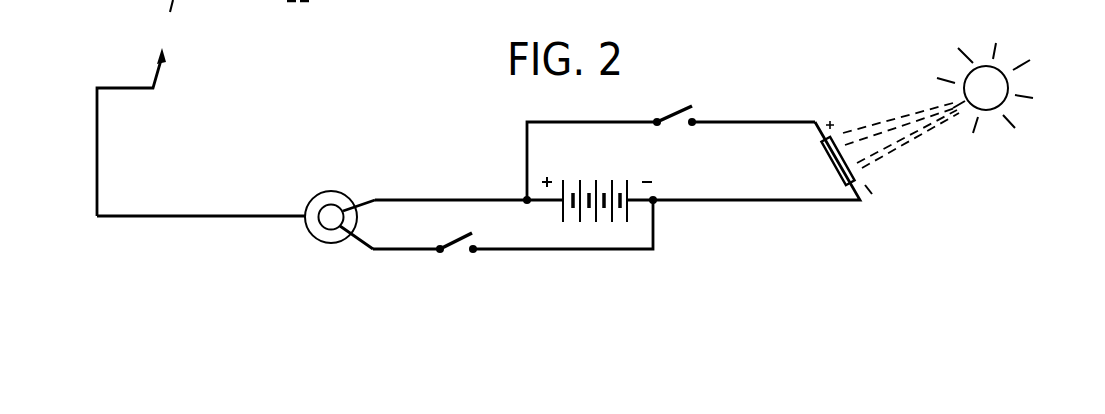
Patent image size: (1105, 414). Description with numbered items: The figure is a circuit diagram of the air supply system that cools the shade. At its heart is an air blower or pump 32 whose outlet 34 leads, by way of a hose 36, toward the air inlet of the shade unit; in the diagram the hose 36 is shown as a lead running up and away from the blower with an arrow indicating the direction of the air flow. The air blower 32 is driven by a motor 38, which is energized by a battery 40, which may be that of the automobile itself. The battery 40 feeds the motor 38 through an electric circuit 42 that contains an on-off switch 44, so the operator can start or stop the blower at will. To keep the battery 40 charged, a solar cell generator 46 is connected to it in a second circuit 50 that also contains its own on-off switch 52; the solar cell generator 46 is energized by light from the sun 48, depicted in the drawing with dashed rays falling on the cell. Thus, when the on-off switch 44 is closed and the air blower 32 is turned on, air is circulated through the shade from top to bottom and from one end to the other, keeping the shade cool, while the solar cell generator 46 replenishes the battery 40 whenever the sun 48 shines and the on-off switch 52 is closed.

The air blower 32 is at (309, 234).
The outlet 34 is at (306, 209).
The hose 36 is at (97, 127).
The motor 38 is at (333, 232).
The battery 40 is at (603, 184).
The electric circuit 42 is at (422, 200).
The on-off switch 44 is at (458, 250).
The solar cell generator 46 is at (824, 153).
The sun 48 is at (1011, 85).
The circuit 50 is at (767, 201).
The on-off switch 52 is at (674, 106).